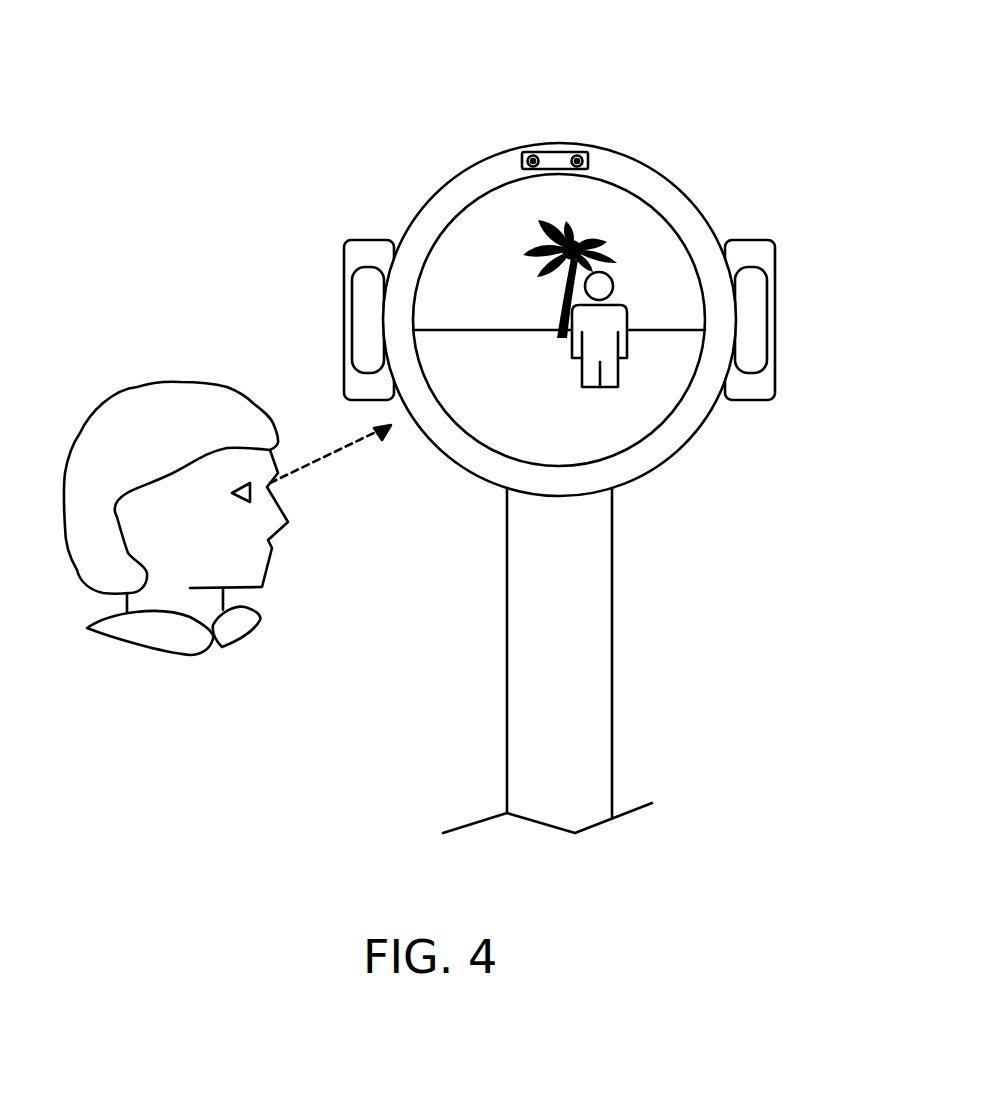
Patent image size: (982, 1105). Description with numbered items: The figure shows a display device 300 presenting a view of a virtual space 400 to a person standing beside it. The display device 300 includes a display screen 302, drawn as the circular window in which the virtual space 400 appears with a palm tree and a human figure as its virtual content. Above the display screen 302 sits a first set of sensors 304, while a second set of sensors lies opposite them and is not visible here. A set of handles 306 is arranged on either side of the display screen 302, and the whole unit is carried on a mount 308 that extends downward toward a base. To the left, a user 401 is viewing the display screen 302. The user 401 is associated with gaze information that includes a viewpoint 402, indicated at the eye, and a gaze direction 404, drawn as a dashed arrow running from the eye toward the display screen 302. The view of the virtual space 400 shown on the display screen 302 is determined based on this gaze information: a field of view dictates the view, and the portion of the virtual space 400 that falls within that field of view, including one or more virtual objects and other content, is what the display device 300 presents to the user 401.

The display device 300 is at (546, 431).
The display screen 302 is at (487, 238).
The first set of sensors 304 is at (557, 150).
The set of handles 306 is at (357, 260).
The mount 308 is at (612, 617).
The virtual space 400 is at (495, 306).
The user 401 is at (137, 425).
The viewpoint 402 is at (273, 497).
The gaze direction 404 is at (352, 443).